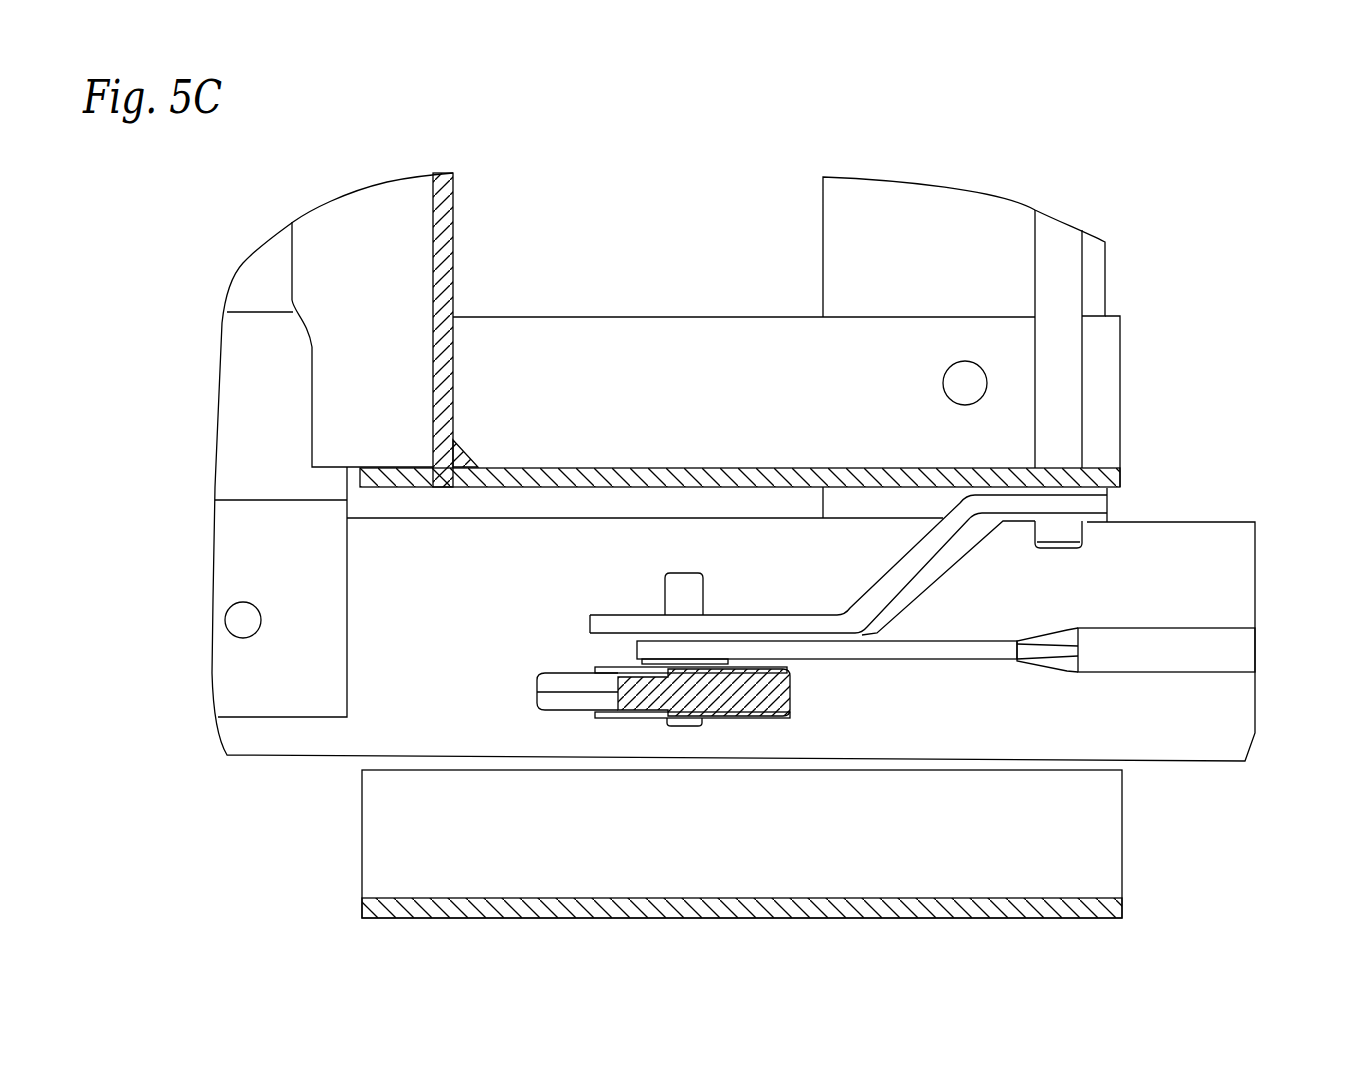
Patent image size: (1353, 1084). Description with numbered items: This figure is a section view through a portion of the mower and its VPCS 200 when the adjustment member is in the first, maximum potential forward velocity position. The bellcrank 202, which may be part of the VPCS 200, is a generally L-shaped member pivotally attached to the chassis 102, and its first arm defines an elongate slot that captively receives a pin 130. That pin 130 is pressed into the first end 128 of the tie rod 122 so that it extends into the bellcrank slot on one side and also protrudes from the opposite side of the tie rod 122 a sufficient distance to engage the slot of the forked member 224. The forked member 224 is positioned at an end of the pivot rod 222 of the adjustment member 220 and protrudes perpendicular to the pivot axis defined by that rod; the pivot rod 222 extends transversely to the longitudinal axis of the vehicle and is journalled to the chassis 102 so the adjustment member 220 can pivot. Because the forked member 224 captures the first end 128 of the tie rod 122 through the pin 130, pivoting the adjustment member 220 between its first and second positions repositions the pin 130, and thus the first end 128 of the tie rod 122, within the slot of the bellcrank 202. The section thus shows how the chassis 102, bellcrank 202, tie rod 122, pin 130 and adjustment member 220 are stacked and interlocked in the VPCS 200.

The chassis 102 is at (626, 468).
The tie rod 122 is at (1202, 673).
The first end 128 is at (912, 658).
The pin 130 is at (667, 595).
The VPCS 200 is at (1166, 462).
The bellcrank 202 is at (563, 710).
The adjustment member 220 is at (1087, 522).
The pivot rod 222 is at (1083, 279).
The forked member 224 is at (752, 615).